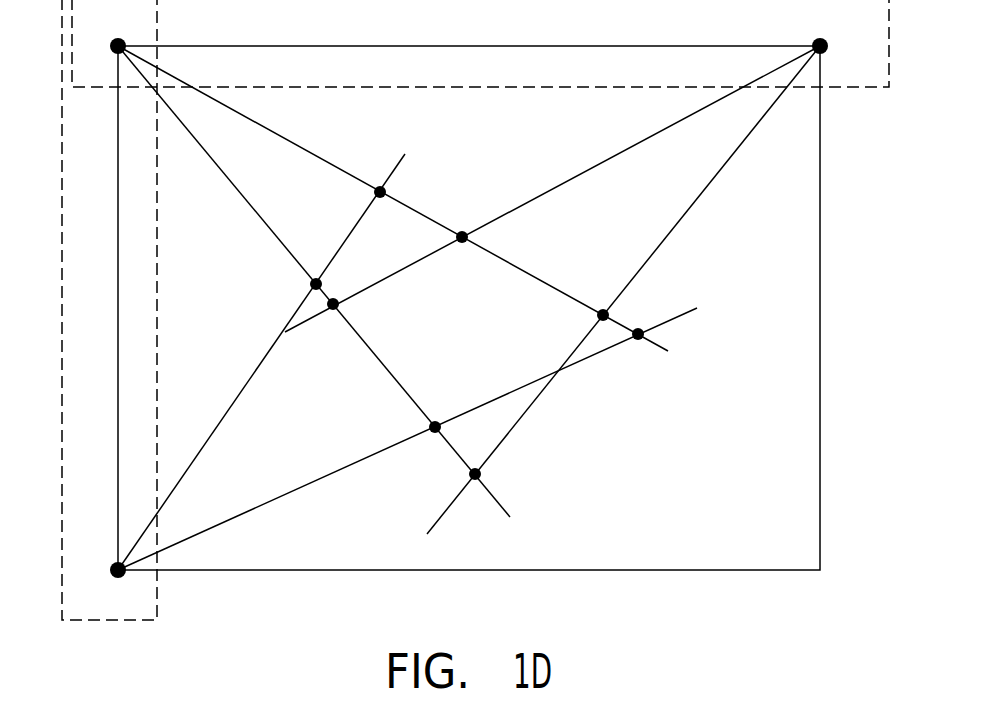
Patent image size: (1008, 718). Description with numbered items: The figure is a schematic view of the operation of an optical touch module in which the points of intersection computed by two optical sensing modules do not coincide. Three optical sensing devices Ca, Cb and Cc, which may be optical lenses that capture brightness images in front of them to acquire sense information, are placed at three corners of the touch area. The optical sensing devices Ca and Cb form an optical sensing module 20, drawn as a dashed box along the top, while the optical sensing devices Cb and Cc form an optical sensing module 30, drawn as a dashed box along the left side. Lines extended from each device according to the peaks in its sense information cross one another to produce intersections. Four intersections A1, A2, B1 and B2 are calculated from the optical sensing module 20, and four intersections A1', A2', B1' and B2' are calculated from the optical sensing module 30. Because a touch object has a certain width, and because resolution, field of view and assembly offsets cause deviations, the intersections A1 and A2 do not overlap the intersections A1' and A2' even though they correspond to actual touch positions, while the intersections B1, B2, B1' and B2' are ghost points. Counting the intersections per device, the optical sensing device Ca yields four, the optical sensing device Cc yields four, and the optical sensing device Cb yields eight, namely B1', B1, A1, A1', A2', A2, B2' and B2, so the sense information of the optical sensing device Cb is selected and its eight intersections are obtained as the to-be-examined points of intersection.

The optical sensing module 20 is at (849, 88).
The optical sensing module 30 is at (62, 324).
The optical sensing device Ca is at (836, 33).
The optical sensing device Cb is at (104, 30).
The optical sensing device Cc is at (107, 584).
The intersection A1 is at (600, 298).
The intersection A1' is at (635, 354).
The intersection A2 is at (352, 314).
The intersection A2' is at (293, 290).
The intersection B1 is at (486, 240).
The intersection B1' is at (403, 187).
The intersection B2 is at (493, 477).
The intersection B2' is at (445, 409).